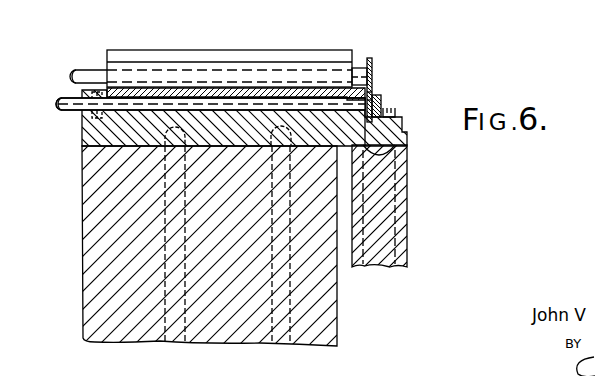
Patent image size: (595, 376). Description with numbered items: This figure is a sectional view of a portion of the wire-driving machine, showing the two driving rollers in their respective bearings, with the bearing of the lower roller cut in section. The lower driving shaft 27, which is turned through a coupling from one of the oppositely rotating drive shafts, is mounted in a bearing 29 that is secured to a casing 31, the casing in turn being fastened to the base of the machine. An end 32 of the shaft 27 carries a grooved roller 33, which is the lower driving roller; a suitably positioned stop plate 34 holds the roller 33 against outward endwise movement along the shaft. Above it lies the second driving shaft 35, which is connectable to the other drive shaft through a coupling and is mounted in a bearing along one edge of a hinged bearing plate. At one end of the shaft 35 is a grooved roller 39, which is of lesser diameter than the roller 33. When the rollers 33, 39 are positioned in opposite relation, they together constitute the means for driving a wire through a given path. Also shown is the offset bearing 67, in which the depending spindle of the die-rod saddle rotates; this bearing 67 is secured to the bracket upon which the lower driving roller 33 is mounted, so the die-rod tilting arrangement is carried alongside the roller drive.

The shaft 27 is at (67, 112).
The bearing 29 is at (82, 140).
The casing 31 is at (337, 314).
The end of the shaft 32 is at (373, 92).
The grooved roller 33 is at (390, 108).
The stop plate 34 is at (381, 96).
The shaft 35 is at (83, 72).
The grooved roller 39 is at (370, 63).
The offset bearing 67 is at (407, 203).